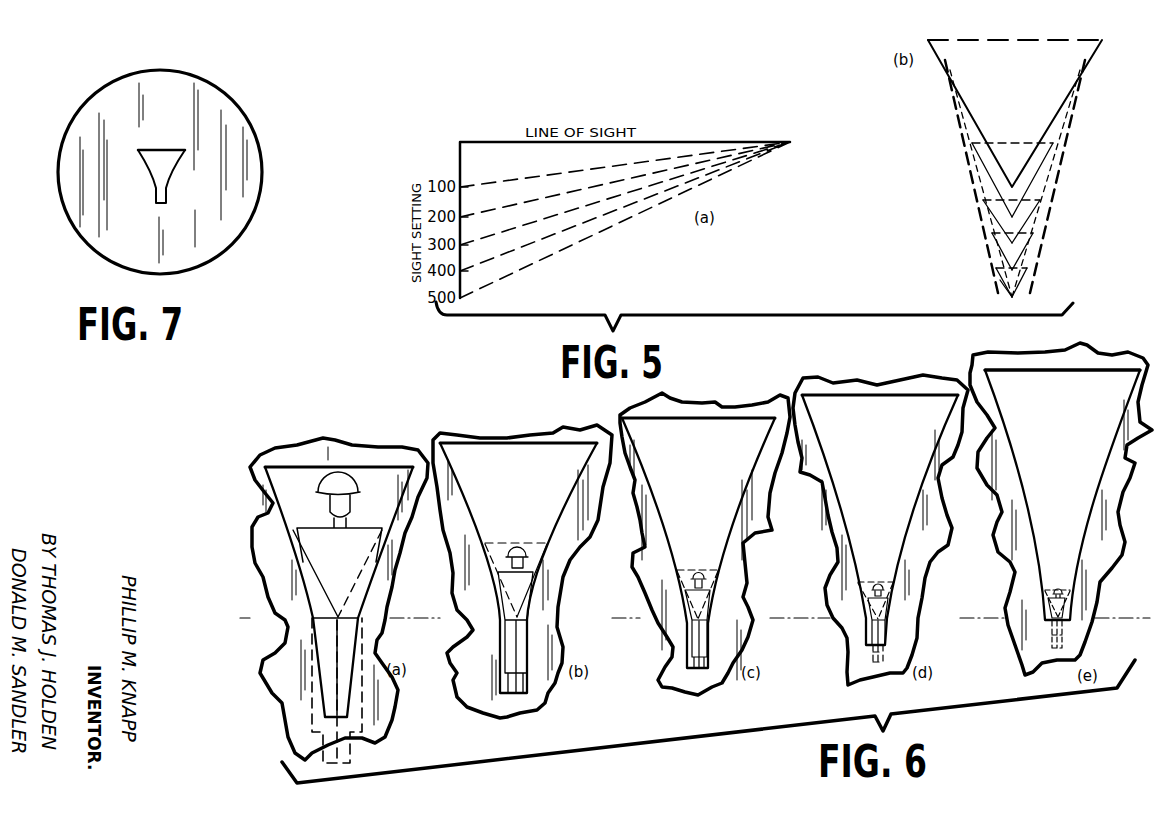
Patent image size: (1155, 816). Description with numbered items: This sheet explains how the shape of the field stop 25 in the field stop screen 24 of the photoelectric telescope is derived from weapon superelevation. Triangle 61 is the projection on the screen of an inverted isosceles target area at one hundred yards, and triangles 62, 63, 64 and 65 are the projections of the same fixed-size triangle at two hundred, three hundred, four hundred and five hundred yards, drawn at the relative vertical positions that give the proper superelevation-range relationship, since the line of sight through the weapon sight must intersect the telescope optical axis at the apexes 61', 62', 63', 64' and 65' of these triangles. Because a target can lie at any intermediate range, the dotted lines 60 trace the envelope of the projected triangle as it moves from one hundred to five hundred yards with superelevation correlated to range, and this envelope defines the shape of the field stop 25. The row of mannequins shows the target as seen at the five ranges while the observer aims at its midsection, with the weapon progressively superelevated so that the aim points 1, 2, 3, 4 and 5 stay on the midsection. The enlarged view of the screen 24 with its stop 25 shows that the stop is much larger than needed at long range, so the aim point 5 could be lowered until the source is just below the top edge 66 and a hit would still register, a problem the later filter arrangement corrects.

In FIG. 6, the aim point at 100 yards 1 is at (340, 615).
In FIG. 6, the aim point at 200 yards 2 is at (518, 617).
In FIG. 6, the aim point at 300 yards 3 is at (699, 620).
In FIG. 6, the aim point at 400 yards 4 is at (878, 620).
In FIG. 6, the aim point at 500 yards 5 is at (1058, 618).
In FIG. 7, the field stop screen 24 is at (262, 165).
In FIG. 6, the field stop screen 24 is at (398, 548).
In FIG. 7, the field stop 25 is at (160, 180).
In FIG. 6, the field stop 25 is at (345, 683).
In FIG. 5, the dotted envelope lines 60 is at (960, 118).
In FIG. 5, the 100-yard triangle 61 is at (1031, 168).
In FIG. 5, the apex of 100-yard triangle 61' is at (967, 180).
In FIG. 5, the 200-yard triangle 62 is at (1034, 180).
In FIG. 5, the apex of 200-yard triangle 62' is at (972, 216).
In FIG. 5, the 300-yard triangle 63 is at (1039, 221).
In FIG. 5, the apex of 300-yard triangle 63' is at (976, 246).
In FIG. 5, the 400-yard triangle 64 is at (1034, 251).
In FIG. 5, the apex of 400-yard triangle 64' is at (982, 274).
In FIG. 5, the 500-yard triangle 65 is at (1030, 283).
In FIG. 5, the apex of 500-yard triangle 65' is at (985, 287).
In FIG. 7, the top edge of field stop 66 is at (150, 152).
In FIG. 6, the top edge of field stop 66 is at (1042, 372).